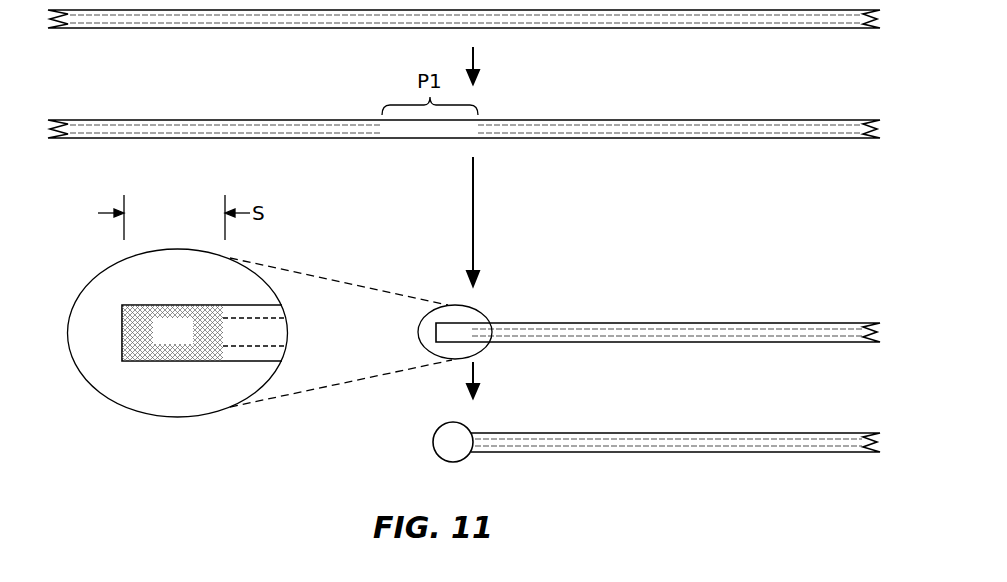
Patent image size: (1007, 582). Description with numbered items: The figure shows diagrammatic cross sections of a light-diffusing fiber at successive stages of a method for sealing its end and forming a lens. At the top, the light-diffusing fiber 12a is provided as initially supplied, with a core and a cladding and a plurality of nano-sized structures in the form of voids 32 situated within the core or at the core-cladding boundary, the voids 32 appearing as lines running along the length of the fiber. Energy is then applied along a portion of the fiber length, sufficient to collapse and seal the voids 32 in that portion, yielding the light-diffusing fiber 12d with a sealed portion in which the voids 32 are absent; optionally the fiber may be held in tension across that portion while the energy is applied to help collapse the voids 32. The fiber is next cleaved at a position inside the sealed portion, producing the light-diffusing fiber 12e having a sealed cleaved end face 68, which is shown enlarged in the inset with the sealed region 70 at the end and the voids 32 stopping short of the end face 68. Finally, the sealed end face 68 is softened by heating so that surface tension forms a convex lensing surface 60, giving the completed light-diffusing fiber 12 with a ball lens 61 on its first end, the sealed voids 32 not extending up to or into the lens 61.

The light-diffusing fiber 12a is at (771, 28).
The light-diffusing fiber 12d is at (771, 138).
The light-diffusing fiber 12e is at (793, 342).
The light-diffusing fiber 12 is at (623, 451).
The voids 32 is at (562, 28).
The sealed cleaved end face 68 is at (260, 333).
The fused region 70 is at (189, 344).
The convex lensing surface 60 is at (420, 437).
The ball lens 61 is at (445, 449).